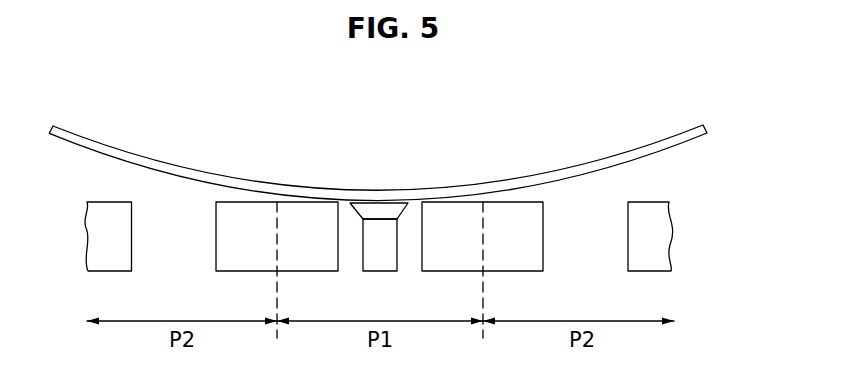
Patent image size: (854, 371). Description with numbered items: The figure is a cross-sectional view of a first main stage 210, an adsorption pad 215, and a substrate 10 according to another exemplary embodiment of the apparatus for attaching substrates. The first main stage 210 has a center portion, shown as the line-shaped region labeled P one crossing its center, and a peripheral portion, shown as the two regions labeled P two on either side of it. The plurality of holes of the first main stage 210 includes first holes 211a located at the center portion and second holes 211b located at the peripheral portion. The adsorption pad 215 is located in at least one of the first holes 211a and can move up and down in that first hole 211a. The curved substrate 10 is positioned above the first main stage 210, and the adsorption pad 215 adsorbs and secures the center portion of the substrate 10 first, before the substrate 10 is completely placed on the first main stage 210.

The substrate 10 is at (543, 178).
The first main stage 210 is at (417, 187).
The first holes 211a is at (339, 242).
The second holes 211b is at (158, 240).
The adsorption pad 215 is at (382, 208).